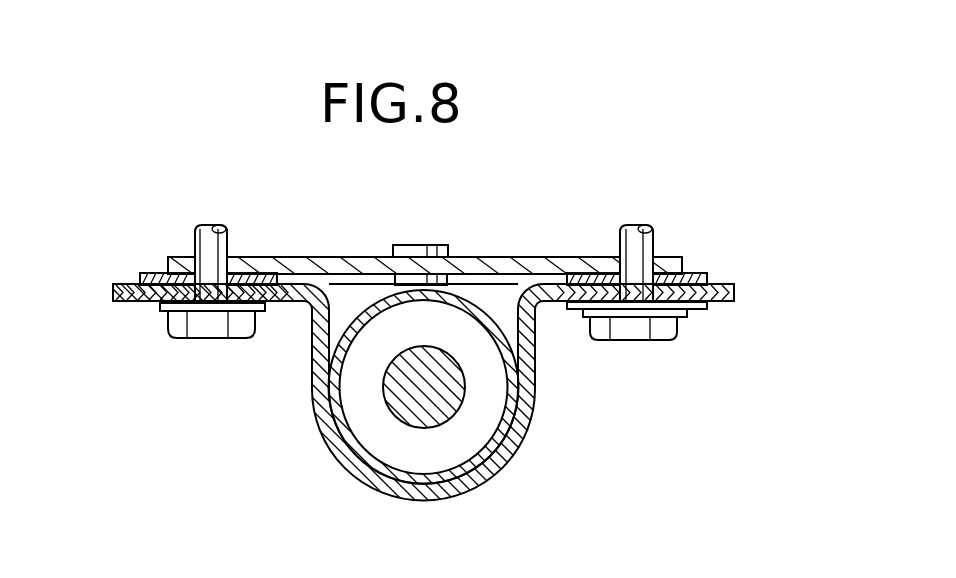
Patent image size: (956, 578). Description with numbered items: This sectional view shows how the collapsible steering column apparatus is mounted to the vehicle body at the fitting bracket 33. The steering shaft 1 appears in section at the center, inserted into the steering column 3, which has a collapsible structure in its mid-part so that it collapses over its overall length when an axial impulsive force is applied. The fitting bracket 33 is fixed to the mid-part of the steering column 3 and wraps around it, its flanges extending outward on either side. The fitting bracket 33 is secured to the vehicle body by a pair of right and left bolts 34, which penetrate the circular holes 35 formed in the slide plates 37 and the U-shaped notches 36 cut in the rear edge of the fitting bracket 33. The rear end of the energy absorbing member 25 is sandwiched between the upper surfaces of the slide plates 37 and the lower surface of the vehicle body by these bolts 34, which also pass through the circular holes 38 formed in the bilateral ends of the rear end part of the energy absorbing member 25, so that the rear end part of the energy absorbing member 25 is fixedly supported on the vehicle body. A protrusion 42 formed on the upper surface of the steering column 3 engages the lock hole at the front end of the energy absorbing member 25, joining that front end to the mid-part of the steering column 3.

The steering shaft 1 is at (457, 386).
The steering column 3 is at (513, 400).
The energy absorbing member 25 is at (522, 263).
The fitting bracket 33 is at (503, 465).
The bolt 34 is at (181, 330).
The circular hole 35 is at (204, 275).
The U-shaped notch 36 is at (632, 305).
The slide plate 37 is at (138, 303).
The circular hole 38 is at (220, 263).
The protrusion 42 is at (415, 252).